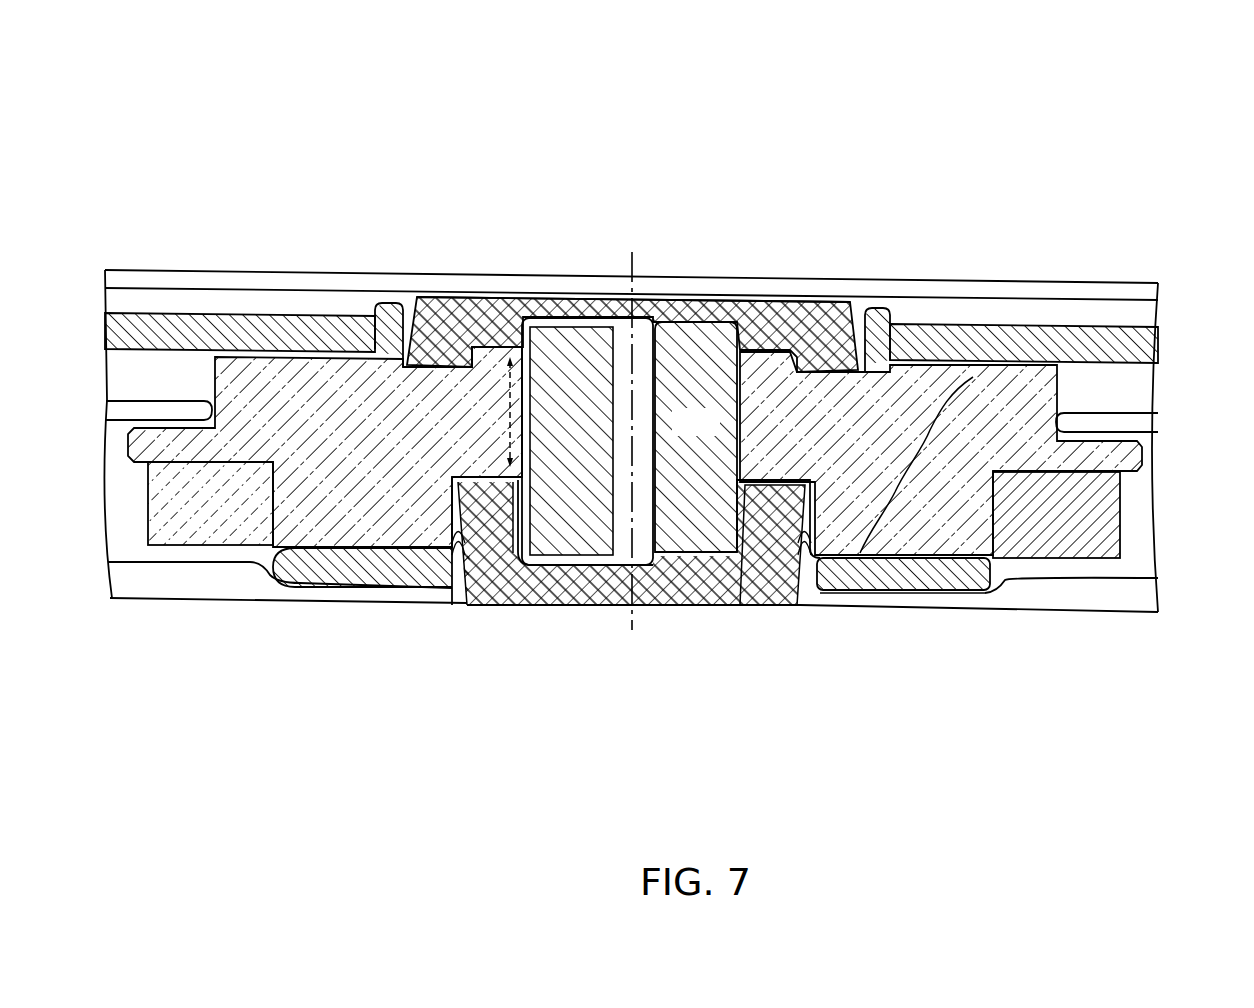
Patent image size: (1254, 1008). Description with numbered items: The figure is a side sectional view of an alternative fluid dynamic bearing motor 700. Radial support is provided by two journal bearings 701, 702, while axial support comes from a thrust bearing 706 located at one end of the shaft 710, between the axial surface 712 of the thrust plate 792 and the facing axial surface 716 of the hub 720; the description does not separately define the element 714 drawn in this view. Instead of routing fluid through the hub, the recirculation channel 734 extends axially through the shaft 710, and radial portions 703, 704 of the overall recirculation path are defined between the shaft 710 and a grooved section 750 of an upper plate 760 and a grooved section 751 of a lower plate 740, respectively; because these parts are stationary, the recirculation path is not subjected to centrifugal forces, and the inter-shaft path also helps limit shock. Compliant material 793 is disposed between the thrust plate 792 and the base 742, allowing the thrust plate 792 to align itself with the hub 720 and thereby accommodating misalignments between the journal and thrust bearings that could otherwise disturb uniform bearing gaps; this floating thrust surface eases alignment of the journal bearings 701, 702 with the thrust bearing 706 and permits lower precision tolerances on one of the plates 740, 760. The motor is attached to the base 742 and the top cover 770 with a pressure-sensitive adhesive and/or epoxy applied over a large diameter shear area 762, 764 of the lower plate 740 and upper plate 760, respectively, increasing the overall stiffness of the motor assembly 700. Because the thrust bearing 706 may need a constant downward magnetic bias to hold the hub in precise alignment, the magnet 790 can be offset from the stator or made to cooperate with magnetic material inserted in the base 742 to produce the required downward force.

The fluid dynamic bearing motor 700 is at (910, 122).
The journal bearing 701 is at (530, 395).
The journal bearing 702 is at (568, 558).
The radial portion of recirculation path 703 is at (576, 317).
The radial portion of recirculation path 704 is at (578, 562).
The thrust bearing 706 is at (363, 553).
The shaft 710 is at (715, 434).
The axial surface of thrust plate 712 is at (742, 555).
The bead 714 is at (787, 507).
The axial surface of hub 716 is at (973, 377).
The hub 720 is at (1007, 413).
The recirculation channel 734 is at (645, 353).
The lower plate 740 is at (765, 560).
The base 742 is at (923, 605).
The grooved section of upper plate 750 is at (556, 320).
The grooved section of lower plate 751 is at (600, 570).
The upper plate 760 is at (815, 307).
The large diameter shear area 762 is at (655, 605).
The large diameter shear area 764 is at (720, 297).
The top cover 770 is at (329, 282).
The magnet 790 is at (1113, 525).
The thrust plate 792 is at (972, 573).
The compliant material 793 is at (877, 593).